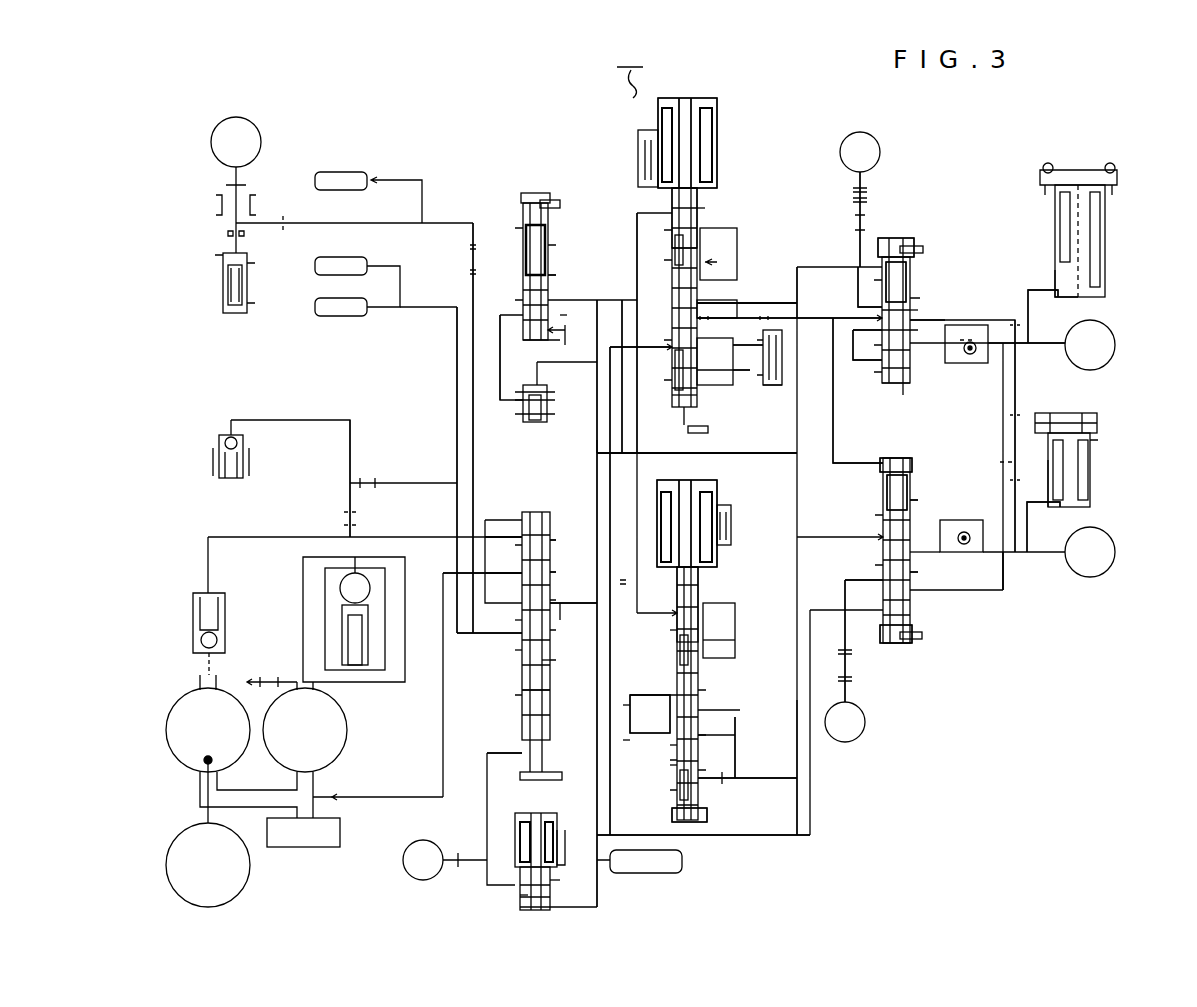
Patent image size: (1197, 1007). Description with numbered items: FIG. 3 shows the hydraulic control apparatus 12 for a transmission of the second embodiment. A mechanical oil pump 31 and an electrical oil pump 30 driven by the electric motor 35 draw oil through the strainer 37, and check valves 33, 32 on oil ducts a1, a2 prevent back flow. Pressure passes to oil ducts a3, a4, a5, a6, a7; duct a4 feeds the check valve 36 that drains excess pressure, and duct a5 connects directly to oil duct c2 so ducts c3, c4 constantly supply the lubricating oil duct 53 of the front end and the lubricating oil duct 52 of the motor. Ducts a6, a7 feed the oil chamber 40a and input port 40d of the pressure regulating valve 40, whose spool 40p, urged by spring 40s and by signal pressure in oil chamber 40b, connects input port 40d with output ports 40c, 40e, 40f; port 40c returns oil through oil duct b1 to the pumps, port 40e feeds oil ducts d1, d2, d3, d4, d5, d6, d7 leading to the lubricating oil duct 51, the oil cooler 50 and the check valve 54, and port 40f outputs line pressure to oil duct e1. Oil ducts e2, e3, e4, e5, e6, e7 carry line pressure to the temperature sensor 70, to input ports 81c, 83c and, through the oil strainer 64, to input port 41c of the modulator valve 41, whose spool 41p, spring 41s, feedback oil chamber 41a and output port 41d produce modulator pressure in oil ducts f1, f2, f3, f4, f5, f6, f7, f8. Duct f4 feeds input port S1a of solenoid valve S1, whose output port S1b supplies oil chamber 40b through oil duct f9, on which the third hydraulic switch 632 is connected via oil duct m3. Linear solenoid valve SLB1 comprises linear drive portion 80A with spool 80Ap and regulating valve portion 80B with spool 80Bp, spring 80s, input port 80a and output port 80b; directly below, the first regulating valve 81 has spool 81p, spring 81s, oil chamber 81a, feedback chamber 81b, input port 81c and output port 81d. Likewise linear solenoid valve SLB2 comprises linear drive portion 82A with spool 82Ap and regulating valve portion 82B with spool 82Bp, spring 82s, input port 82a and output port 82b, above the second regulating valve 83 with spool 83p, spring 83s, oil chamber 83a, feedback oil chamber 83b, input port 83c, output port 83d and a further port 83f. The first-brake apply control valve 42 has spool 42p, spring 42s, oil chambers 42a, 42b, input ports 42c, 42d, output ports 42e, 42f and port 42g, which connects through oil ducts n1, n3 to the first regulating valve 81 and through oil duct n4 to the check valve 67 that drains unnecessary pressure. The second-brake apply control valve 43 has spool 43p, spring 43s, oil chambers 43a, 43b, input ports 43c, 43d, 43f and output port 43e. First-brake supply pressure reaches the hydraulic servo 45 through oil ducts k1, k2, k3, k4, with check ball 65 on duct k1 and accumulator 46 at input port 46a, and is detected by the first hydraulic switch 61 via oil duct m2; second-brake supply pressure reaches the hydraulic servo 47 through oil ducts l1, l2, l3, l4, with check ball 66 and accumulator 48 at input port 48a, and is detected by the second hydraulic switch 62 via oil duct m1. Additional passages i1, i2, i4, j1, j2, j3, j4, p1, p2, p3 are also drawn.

The hydraulic control apparatus 12 is at (628, 65).
The electrical oil pump 30 is at (178, 691).
The mechanical oil pump 31 is at (350, 705).
The check valve 32 is at (199, 583).
The check valve 33 is at (362, 568).
The electric motor 35 is at (180, 824).
The check valve 36 is at (224, 419).
The strainer 37 is at (345, 835).
The pressure regulating valve 40 is at (550, 505).
The oil chamber 40a is at (570, 540).
The oil chamber 40b is at (500, 752).
The output port 40c is at (503, 551).
The input port 40d is at (503, 628).
The output port 40e is at (520, 650).
The output port 40f is at (556, 578).
The spool 40p is at (559, 658).
The spring 40s is at (522, 688).
The modulator valve 41 is at (540, 185).
The feedback oil chamber 41a is at (560, 344).
The input port 41c is at (522, 355).
The output port 41d is at (568, 292).
The spool 41p is at (556, 280).
The spring 41s is at (548, 245).
The B1 apply control valve 42 is at (921, 236).
The oil chamber 42a is at (880, 395).
The oil chamber 42b is at (891, 237).
The input port 42c is at (839, 321).
The input port 42d is at (915, 318).
The output port 42e is at (905, 395).
The output port 42f is at (880, 286).
The port 42g is at (866, 345).
The spool 42p is at (918, 305).
The spring 42s is at (910, 272).
The B2 apply control valve 43 is at (915, 455).
The oil chamber 43a is at (880, 635).
The oil chamber 43b is at (880, 465).
The input port 43c is at (870, 535).
The input port 43d is at (922, 571).
The output port 43e is at (925, 543).
The input port 43f is at (848, 590).
The spool 43p is at (930, 500).
The spring 43s is at (910, 480).
The hydraulic servo 45 is at (1112, 333).
The accumulator 46 is at (1077, 165).
The input port 46a is at (1055, 272).
The hydraulic servo 47 is at (1117, 544).
The accumulator 48 is at (1092, 410).
The input port 48a is at (1048, 465).
The oil cooler 50 is at (262, 135).
The lubricating oil duct 51 is at (348, 164).
The lubricating oil duct 52 is at (345, 250).
The lubricating oil duct 53 is at (344, 322).
The check valve 54 is at (228, 318).
The first hydraulic switch 61 is at (862, 735).
The second hydraulic switch 62 is at (878, 140).
The third hydraulic switch 632 is at (428, 887).
The oil strainer 64 is at (548, 410).
The check ball 65 is at (968, 380).
The check ball 66 is at (987, 506).
The check valve 67 is at (775, 390).
The temperature sensor 70 is at (688, 862).
The linear drive portion 80A is at (720, 135).
The spool 80Ap is at (703, 118).
The regulating valve portion 80B is at (700, 200).
The spool 80Bp is at (705, 212).
The input port 80a is at (650, 210).
The output port 80b is at (698, 254).
The spring 80s is at (659, 254).
The first regulating valve 81 is at (700, 295).
The oil chamber 81a is at (725, 280).
The feedback chamber 81b is at (700, 395).
The input port 81c is at (665, 345).
The output port 81d is at (715, 361).
The spool 81p is at (715, 371).
The spring 81s is at (674, 368).
The linear drive portion 82A is at (720, 498).
The spool 82Ap is at (685, 530).
The regulating valve portion 82B is at (712, 590).
The spool 82Bp is at (649, 626).
The input port 82a is at (655, 598).
The output port 82b is at (719, 630).
The spring 82s is at (675, 645).
The second regulating valve 83 is at (706, 690).
The oil chamber 83a is at (719, 641).
The feedback oil chamber 83b is at (708, 800).
The input port 83c is at (655, 753).
The output port 83d is at (735, 710).
The port 83f is at (650, 692).
The spool 83p is at (648, 755).
The spring 83s is at (662, 785).
The solenoid valve S1 is at (538, 812).
The input port S1a is at (565, 882).
The output port S1b is at (520, 897).
The linear solenoid valve SLB1 is at (687, 95).
The linear solenoid valve SLB2 is at (705, 478).
The oil duct a1 is at (440, 612).
The oil duct a2 is at (212, 563).
The oil duct a3 is at (415, 575).
The oil duct a4 is at (350, 440).
The oil duct a5 is at (400, 483).
The oil duct a6 is at (492, 520).
The oil duct a7 is at (515, 590).
The oil duct b1 is at (442, 760).
The oil duct c2 is at (456, 338).
The oil duct c3 is at (393, 318).
The oil duct c4 is at (392, 278).
The oil duct d1 is at (487, 640).
The oil duct d2 is at (450, 573).
The oil duct d3 is at (474, 450).
The oil duct d4 is at (422, 195).
The oil duct d5 is at (320, 223).
The oil duct d6 is at (262, 178).
The oil duct d7 is at (226, 236).
The oil duct e1 is at (573, 622).
The oil duct e2 is at (585, 735).
The oil duct e3 is at (612, 625).
The oil duct e4 is at (614, 525).
The oil duct e5 is at (610, 345).
The oil duct e6 is at (588, 362).
The oil duct e7 is at (500, 390).
The oil duct f1 is at (560, 323).
The oil duct f2 is at (578, 343).
The oil duct f3 is at (597, 445).
The oil duct f4 is at (597, 890).
The oil duct f5 is at (812, 830).
The oil duct f6 is at (778, 453).
The oil duct f7 is at (640, 415).
The oil duct f8 is at (637, 250).
The oil duct f9 is at (487, 822).
The oil passage i1 is at (748, 348).
The oil passage i2 is at (752, 379).
The oil passage i4 is at (833, 430).
The oil passage j1 is at (716, 748).
The oil passage j2 is at (748, 740).
The oil passage j3 is at (755, 785).
The oil passage j4 is at (797, 840).
The oil duct k1 is at (950, 365).
The oil duct k2 is at (1005, 570).
The oil duct k3 is at (1028, 315).
The oil duct k4 is at (1040, 350).
The oil duct l1 is at (950, 560).
The oil duct l2 is at (1015, 440).
The oil duct l3 is at (1027, 525).
The oil passage l4 is at (1055, 580).
The oil duct m1 is at (858, 240).
The oil duct m2 is at (848, 665).
The oil duct m3 is at (465, 875).
The oil duct n1 is at (812, 275).
The oil duct n3 is at (790, 312).
The oil duct n4 is at (776, 397).
The oil passage p1 is at (650, 716).
The oil passage p2 is at (617, 712).
The oil passage p3 is at (613, 748).